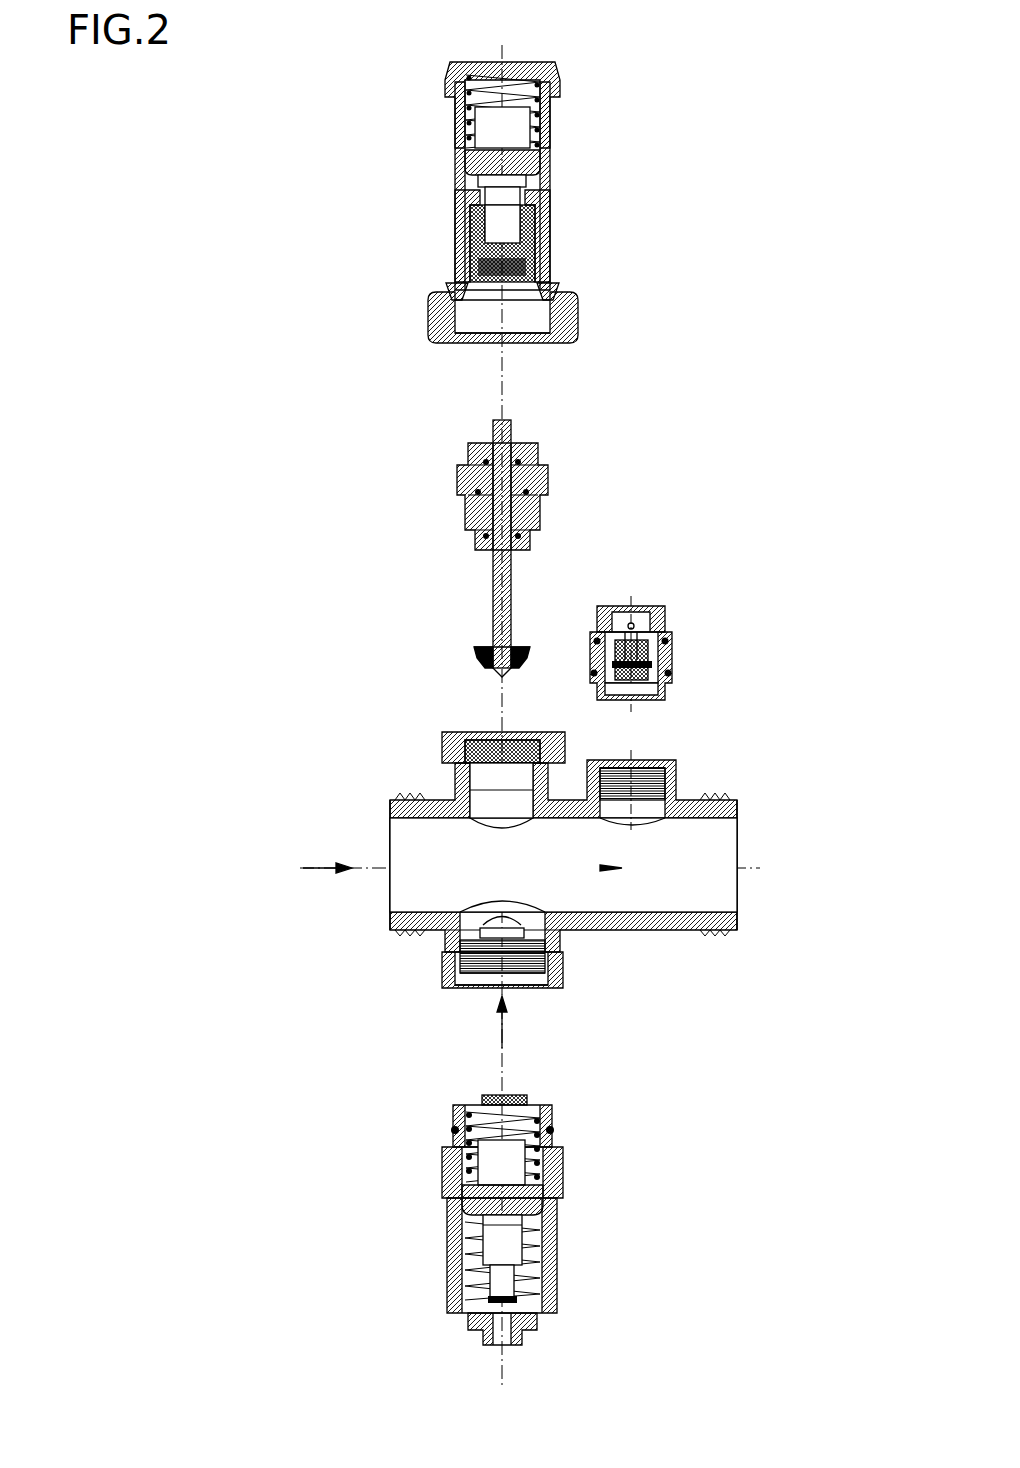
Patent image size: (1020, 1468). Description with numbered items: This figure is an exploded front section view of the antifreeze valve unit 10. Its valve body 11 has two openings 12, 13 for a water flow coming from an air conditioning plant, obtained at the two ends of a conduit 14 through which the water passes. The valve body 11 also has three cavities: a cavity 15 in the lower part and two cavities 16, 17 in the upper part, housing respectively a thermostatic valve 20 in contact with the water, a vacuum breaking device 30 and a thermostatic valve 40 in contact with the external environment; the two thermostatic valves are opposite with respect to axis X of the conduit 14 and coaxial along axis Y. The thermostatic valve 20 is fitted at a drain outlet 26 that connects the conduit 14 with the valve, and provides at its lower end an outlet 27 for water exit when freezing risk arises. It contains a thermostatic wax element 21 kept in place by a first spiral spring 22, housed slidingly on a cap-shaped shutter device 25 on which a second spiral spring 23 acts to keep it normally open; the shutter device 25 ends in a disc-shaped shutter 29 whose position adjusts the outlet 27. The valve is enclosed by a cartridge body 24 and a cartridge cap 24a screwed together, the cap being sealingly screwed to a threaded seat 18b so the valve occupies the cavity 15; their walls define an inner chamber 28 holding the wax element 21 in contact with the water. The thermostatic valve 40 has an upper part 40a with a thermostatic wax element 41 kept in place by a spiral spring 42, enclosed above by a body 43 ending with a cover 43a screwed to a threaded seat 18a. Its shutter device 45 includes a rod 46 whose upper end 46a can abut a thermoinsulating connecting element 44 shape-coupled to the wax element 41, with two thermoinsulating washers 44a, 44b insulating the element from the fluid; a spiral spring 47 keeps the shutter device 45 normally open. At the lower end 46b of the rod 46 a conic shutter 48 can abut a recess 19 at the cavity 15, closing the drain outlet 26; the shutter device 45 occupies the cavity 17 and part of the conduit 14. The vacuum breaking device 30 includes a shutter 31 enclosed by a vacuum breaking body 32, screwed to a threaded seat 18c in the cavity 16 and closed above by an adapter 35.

The antifreeze valve unit 10 is at (775, 120).
The valve body 11 is at (762, 955).
The opening 12 is at (390, 850).
The opening 13 is at (738, 835).
The conduit 14 is at (690, 845).
The cavity 15 is at (548, 945).
The cavity 16 is at (640, 762).
The cavity 17 is at (475, 790).
The threaded seat 18a is at (445, 742).
The threaded seat 18b is at (445, 963).
The threaded seat 18c is at (676, 798).
The recess 19 is at (460, 930).
The thermostatic valve 20 is at (330, 1335).
The thermostatic wax element 21 is at (445, 1163).
The first spiral spring 22 is at (452, 1130).
The second spiral spring 23 is at (552, 1290).
The cartridge body 24 is at (450, 1275).
The cartridge cap 24a is at (445, 1190).
The cap-shaped shutter device 25 is at (470, 1252).
The drain outlet 26 is at (510, 950).
The outlet 27 is at (508, 1340).
The inner chamber 28 is at (545, 1212).
The disc-shaped shutter 29 is at (470, 1305).
The vacuum breaking device 30 is at (680, 595).
The shutter 31 is at (640, 630).
The vacuum breaking body 32 is at (672, 650).
The adapter 35 is at (605, 606).
The thermostatic valve 40 is at (677, 62).
The upper part 40a is at (362, 50).
The thermostatic wax element 41 is at (487, 127).
The spiral spring 42 is at (470, 102).
The body 43 is at (548, 205).
The cover 43a is at (565, 296).
The connecting element 44 is at (468, 235).
The thermoinsulating washer 44a is at (460, 290).
The thermoinsulating washer 44b is at (450, 316).
The shutter device 45 is at (405, 480).
The rod 46 is at (492, 570).
The upper end 46a is at (510, 420).
The lower end 46b is at (507, 670).
The spiral spring 47 is at (540, 490).
The conic shutter 48 is at (478, 652).